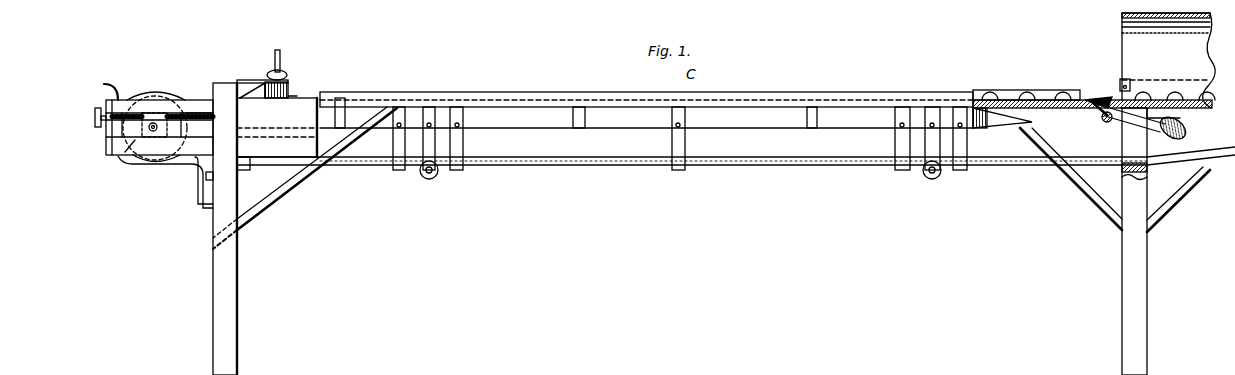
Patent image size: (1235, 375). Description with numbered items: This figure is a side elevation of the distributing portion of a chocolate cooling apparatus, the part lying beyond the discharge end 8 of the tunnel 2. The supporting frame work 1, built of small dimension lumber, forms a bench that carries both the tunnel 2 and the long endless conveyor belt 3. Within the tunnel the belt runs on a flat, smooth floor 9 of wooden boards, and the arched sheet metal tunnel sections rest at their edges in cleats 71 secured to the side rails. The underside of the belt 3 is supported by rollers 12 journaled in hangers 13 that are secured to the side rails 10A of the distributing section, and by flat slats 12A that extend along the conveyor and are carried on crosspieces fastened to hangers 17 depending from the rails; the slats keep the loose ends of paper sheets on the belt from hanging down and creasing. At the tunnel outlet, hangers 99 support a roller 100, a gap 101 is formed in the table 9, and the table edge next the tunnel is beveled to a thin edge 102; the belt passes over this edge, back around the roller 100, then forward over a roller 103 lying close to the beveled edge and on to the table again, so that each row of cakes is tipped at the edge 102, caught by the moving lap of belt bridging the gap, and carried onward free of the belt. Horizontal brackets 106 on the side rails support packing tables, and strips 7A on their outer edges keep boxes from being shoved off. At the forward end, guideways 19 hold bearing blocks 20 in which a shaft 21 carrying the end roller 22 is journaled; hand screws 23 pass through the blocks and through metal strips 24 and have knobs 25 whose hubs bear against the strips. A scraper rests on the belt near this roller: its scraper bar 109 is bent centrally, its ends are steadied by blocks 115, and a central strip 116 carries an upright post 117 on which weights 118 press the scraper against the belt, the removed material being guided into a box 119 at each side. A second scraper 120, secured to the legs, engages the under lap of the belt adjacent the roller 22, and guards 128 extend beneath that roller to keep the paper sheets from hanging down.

The supporting frame work 1 is at (222, 280).
The tunnel member 2 is at (1122, 33).
The endless conveyor belt 3 is at (494, 160).
The strips 7A is at (784, 92).
The discharge end of the tunnel 8 is at (1122, 50).
The floor 9 is at (1030, 115).
The side rails of the distributing section 10A is at (657, 117).
The rollers 12 is at (430, 179).
The slats 12A is at (598, 166).
The hangers 13 is at (431, 115).
The hangers 17 is at (397, 140).
The guideways 19 is at (125, 152).
The bearing blocks 20 is at (149, 135).
The shaft 21 is at (156, 132).
The roller 22 is at (152, 100).
The hand screws 23 is at (200, 113).
The metal strips 24 is at (106, 146).
The knobs 25 is at (95, 112).
The cleats 71 is at (1130, 80).
The hangers 99 is at (1180, 116).
The roller 100 is at (1185, 133).
The gap 101 is at (1098, 110).
The beveled edge 102 is at (1106, 96).
The roller 103 is at (1107, 123).
The horizontal brackets 106 is at (577, 118).
The scraper bar 109 is at (294, 97).
The blocks 115 is at (222, 86).
The central strip 116 is at (290, 86).
The upright post 117 is at (277, 52).
The weights 118 is at (285, 72).
The box 119 is at (280, 145).
The second scraper 120 is at (200, 186).
The guards 128 is at (101, 86).